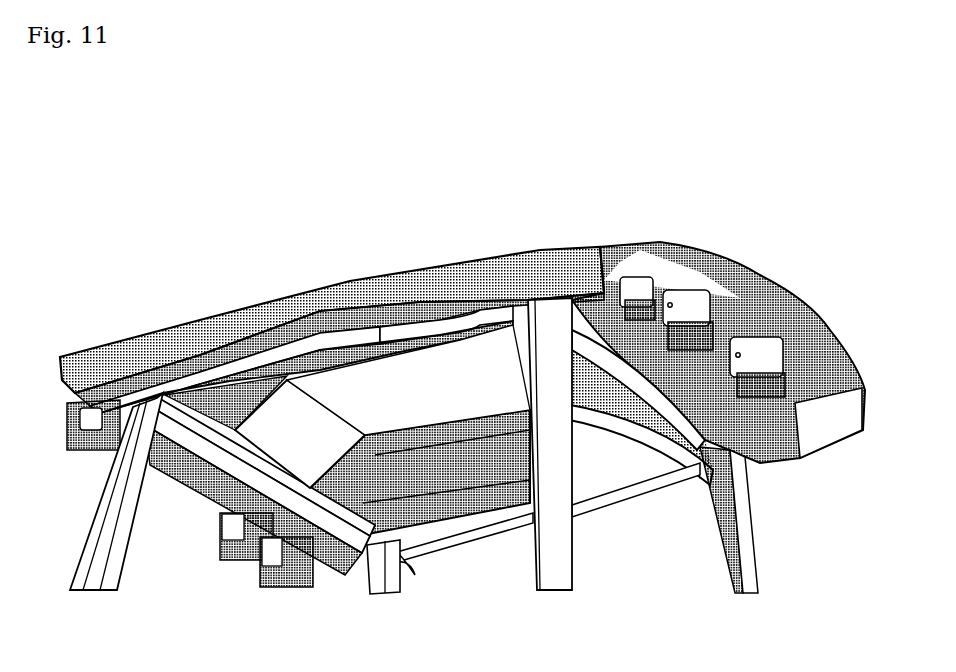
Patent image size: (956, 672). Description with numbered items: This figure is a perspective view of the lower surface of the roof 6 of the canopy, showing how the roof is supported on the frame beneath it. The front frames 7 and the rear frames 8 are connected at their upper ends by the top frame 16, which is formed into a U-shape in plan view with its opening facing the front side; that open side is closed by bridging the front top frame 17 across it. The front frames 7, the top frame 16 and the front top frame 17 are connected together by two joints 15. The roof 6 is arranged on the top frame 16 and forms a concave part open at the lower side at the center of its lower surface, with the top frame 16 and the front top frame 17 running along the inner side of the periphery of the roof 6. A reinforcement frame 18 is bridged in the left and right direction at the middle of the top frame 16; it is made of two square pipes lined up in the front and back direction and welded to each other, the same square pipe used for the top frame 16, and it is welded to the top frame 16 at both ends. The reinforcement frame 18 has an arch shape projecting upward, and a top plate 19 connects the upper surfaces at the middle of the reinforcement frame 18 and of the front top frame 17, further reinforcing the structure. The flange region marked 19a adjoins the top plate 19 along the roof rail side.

The roof 6 is at (183, 337).
The top frame 16 is at (280, 353).
The roof panel flange 19a is at (233, 377).
The reinforcement frame 18 is at (443, 310).
The top plate 19 is at (303, 451).
The joint 15 is at (120, 377).
The front frame 7 is at (117, 497).
The front top frame 17 is at (213, 490).
The rear frame 8 is at (560, 540).